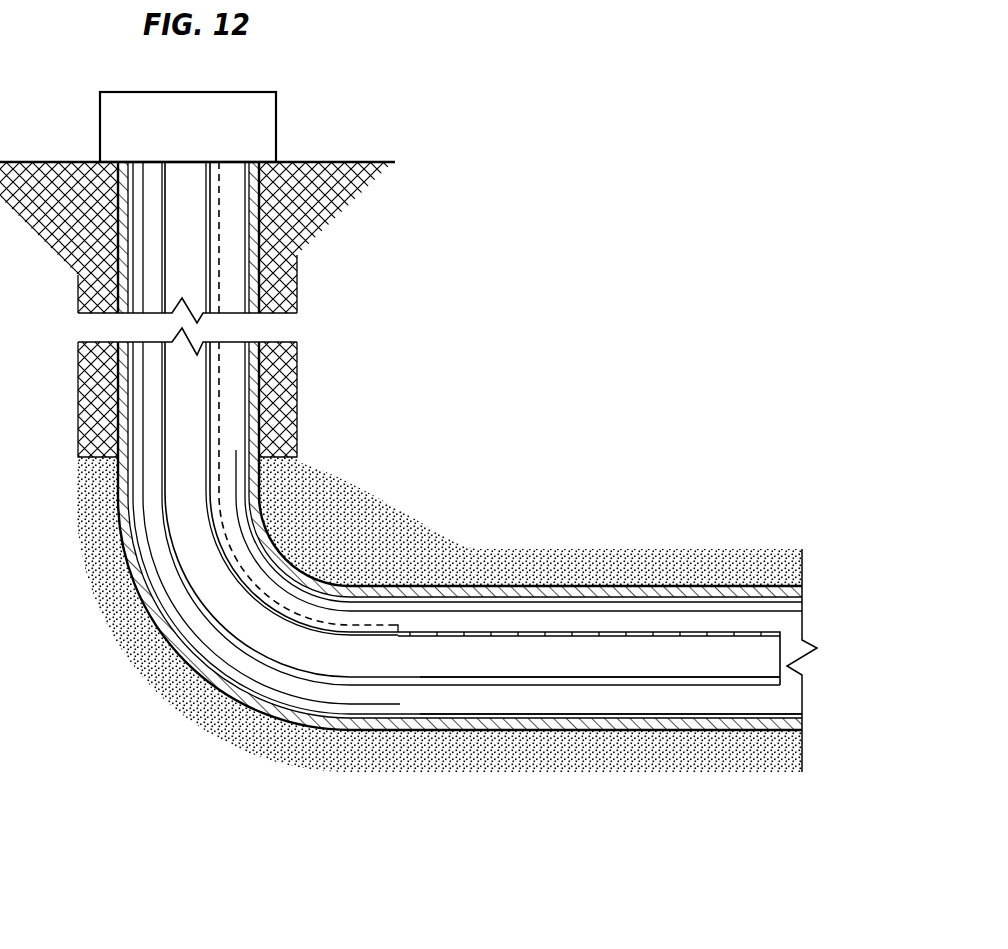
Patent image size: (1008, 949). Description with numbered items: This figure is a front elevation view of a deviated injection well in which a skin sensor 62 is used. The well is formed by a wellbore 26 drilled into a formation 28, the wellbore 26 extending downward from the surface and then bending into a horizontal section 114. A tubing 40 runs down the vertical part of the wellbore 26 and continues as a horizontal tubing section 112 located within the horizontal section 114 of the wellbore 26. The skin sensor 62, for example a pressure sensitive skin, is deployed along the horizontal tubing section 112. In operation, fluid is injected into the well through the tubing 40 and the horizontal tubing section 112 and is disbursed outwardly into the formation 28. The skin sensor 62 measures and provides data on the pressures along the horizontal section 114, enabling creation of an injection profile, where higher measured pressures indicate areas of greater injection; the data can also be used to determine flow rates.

The wellbore 26 is at (143, 430).
The tubing 40 is at (200, 398).
The formation 28 is at (363, 541).
The skin sensor 62 is at (565, 632).
The horizontal tubing section 112 is at (505, 668).
The horizontal section 114 is at (606, 688).